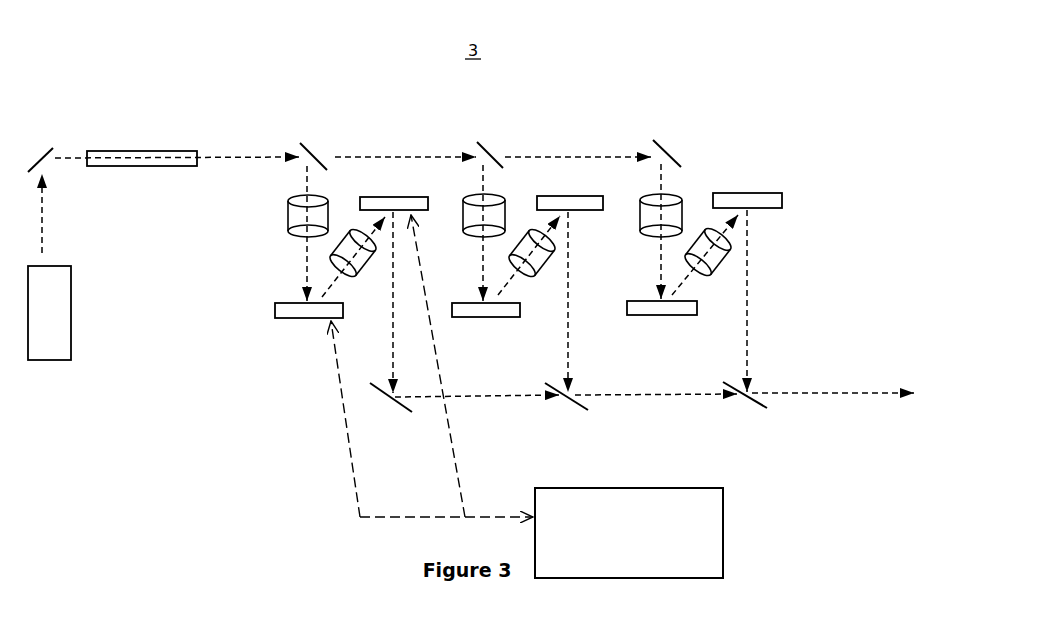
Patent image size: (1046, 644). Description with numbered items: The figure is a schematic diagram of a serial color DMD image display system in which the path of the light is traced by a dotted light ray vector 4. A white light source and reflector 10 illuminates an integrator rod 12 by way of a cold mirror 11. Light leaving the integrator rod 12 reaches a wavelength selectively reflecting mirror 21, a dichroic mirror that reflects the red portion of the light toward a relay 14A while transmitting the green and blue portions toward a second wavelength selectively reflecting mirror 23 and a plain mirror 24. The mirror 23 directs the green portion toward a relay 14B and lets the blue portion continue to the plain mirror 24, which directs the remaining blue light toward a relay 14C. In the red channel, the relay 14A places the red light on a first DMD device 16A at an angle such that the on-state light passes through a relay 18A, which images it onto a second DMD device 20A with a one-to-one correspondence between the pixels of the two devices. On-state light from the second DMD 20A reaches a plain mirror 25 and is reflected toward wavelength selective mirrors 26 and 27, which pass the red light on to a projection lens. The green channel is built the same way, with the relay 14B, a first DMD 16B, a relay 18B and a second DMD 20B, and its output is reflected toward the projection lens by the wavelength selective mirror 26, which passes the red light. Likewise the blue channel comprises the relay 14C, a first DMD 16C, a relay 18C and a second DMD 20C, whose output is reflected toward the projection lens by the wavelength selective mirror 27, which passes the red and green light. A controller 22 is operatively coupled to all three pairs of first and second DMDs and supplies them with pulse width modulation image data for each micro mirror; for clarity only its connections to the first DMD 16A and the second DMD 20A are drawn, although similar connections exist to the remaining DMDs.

The light ray vector 4 is at (478, 267).
The white light source and reflector 10 is at (49, 327).
The cold mirror 11 is at (45, 150).
The integrator rod 12 is at (142, 147).
The relay 14A is at (289, 216).
The relay 14B is at (465, 216).
The relay 14C is at (644, 215).
The first DMD device 16A is at (309, 324).
The first DMD device 16B is at (486, 323).
The first DMD device 16C is at (662, 321).
The relay 18A is at (357, 266).
The relay 18B is at (535, 265).
The relay 18C is at (712, 264).
The second DMD device 20A is at (394, 194).
The second DMD device 20B is at (570, 193).
The second DMD device 20C is at (747, 191).
The wavelength selectively reflecting mirror 21 is at (313, 148).
The controller 22 is at (544, 396).
The wavelength selectively reflecting mirror 23 is at (489, 146).
The plain mirror 24 is at (666, 145).
The plain mirror 25 is at (391, 404).
The wavelength selective mirror 26 is at (566, 410).
The wavelength selective mirror 27 is at (745, 409).